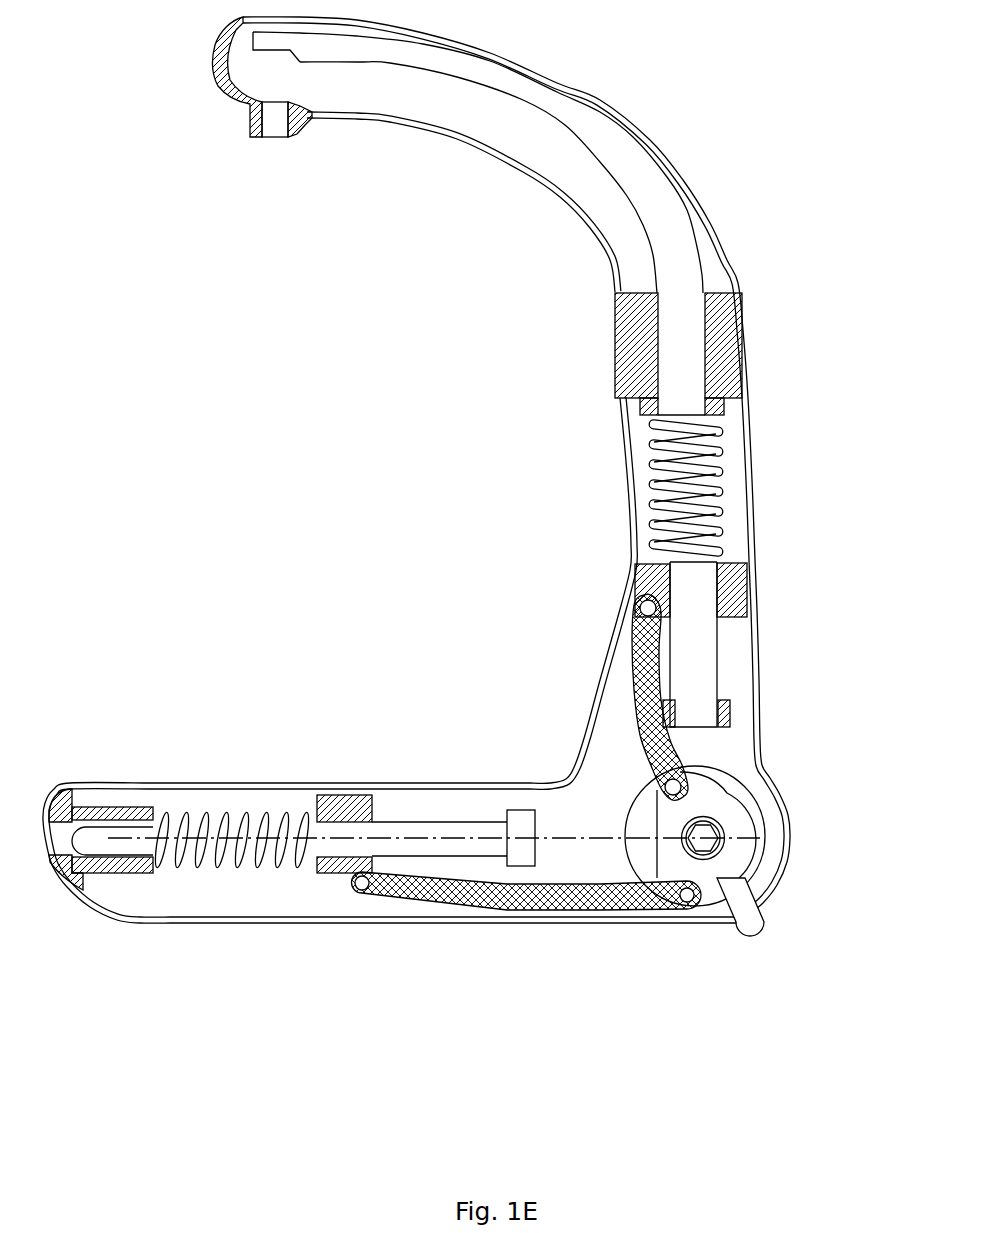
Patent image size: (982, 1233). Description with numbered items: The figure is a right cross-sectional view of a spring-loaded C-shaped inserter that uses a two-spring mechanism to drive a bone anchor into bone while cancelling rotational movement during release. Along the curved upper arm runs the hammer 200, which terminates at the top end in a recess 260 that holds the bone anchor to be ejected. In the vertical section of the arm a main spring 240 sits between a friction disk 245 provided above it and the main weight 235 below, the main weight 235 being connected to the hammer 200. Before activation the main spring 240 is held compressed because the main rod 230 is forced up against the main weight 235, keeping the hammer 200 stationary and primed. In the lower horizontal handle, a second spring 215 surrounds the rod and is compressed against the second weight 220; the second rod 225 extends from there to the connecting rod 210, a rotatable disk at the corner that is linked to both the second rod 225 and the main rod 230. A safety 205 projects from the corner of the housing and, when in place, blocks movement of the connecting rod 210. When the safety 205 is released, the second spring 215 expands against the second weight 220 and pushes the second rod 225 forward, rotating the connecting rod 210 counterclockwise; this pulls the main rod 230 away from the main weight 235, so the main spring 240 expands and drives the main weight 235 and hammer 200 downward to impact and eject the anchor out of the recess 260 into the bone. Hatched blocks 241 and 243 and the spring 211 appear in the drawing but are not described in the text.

The hammer 200 is at (668, 217).
The safety 205 is at (750, 918).
The connecting rod 210 is at (735, 815).
The return spring 211 is at (193, 858).
The second spring 215 is at (232, 818).
The second weight 220 is at (330, 883).
The second rod 225 is at (597, 923).
The main rod 230 is at (637, 685).
The main weight 235 is at (737, 585).
The main spring 240 is at (660, 445).
The bushing 241 is at (730, 315).
The retaining ring 243 is at (728, 715).
The friction disk 245 is at (642, 412).
The recess 260 is at (275, 117).